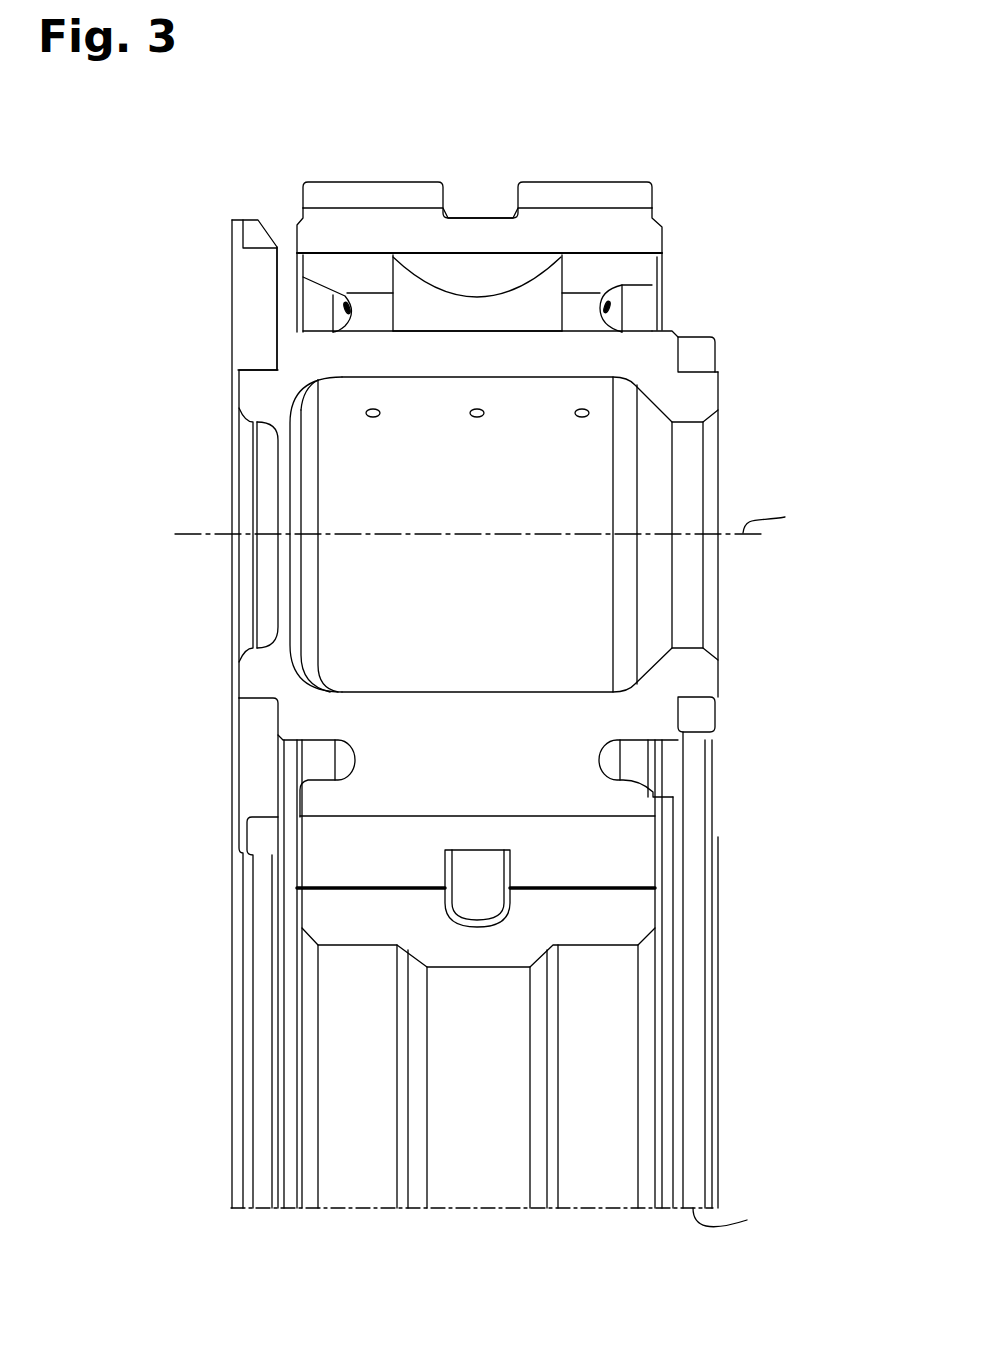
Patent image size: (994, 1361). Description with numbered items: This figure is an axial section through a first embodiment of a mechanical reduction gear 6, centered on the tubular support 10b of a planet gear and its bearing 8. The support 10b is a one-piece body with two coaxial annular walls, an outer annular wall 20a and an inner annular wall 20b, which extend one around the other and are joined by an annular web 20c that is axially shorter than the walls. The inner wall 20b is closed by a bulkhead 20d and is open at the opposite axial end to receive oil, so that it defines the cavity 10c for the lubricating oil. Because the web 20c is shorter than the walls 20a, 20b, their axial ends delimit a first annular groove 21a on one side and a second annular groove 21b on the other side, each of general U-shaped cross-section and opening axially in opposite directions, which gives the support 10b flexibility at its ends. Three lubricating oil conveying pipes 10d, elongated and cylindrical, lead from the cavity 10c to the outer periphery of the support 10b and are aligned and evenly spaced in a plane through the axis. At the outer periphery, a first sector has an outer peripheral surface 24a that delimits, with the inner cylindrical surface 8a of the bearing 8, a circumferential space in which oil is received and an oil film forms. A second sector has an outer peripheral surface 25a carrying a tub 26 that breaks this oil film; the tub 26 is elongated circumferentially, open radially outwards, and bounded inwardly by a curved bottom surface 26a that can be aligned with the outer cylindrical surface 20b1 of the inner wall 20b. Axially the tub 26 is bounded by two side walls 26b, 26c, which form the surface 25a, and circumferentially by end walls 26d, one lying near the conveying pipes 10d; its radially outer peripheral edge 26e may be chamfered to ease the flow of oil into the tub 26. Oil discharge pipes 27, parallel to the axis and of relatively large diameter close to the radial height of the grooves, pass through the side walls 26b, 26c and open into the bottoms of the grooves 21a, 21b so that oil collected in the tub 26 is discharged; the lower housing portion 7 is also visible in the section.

The mechanical reduction gear 6 is at (738, 240).
The valve housing lower portion 7 is at (632, 922).
The bearing 8 is at (652, 181).
The inner cylindrical surface 8a is at (403, 817).
The tubular support 10b is at (737, 378).
The cavity 10c is at (451, 534).
The lubricating oil conveying pipes 10d is at (575, 413).
The outer annular wall 20a is at (327, 267).
The inner annular wall 20b is at (300, 352).
The outer cylindrical surface 20b1 is at (318, 327).
The annular web 20c is at (378, 747).
The bulkhead 20d is at (283, 513).
The first annular groove 21a is at (316, 763).
The second annular groove 21b is at (640, 760).
The outer peripheral surface 24a is at (386, 817).
The outer peripheral surface 25a is at (510, 300).
The tub 26 is at (450, 272).
The bottom surface 26a is at (520, 305).
The side wall 26b is at (366, 285).
The side wall 26c is at (528, 325).
The circumferential end wall 26d is at (510, 307).
The radially outer peripheral edge 26e is at (380, 275).
The oil discharge pipes 27 is at (355, 265).